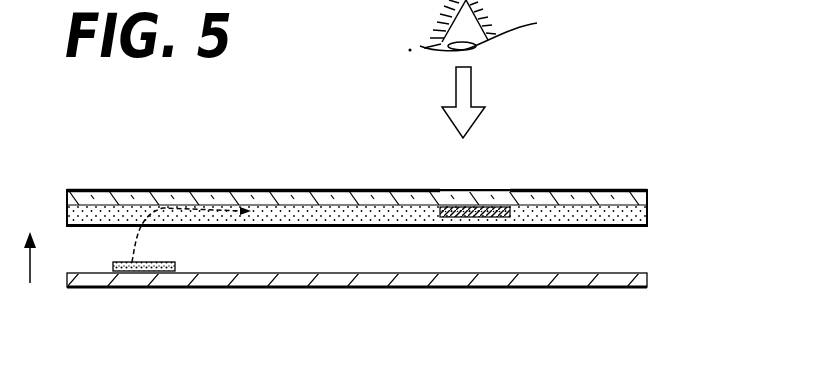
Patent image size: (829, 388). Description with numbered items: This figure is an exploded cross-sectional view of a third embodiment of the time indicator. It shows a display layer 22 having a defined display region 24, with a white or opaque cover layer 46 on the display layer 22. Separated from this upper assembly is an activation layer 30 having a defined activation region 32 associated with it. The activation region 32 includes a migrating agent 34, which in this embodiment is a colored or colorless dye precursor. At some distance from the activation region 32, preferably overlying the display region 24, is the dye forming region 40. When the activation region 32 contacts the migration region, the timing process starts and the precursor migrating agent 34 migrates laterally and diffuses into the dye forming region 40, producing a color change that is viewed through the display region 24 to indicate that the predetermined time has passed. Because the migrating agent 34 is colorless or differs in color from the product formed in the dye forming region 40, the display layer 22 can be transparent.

The display layer 22 is at (400, 179).
The display region 24 is at (473, 191).
The activation layer 30 is at (587, 290).
The activation region 32 is at (127, 262).
The migrating agent 34 is at (205, 213).
The dye forming region 40 is at (473, 207).
The cover layer 46 is at (170, 191).